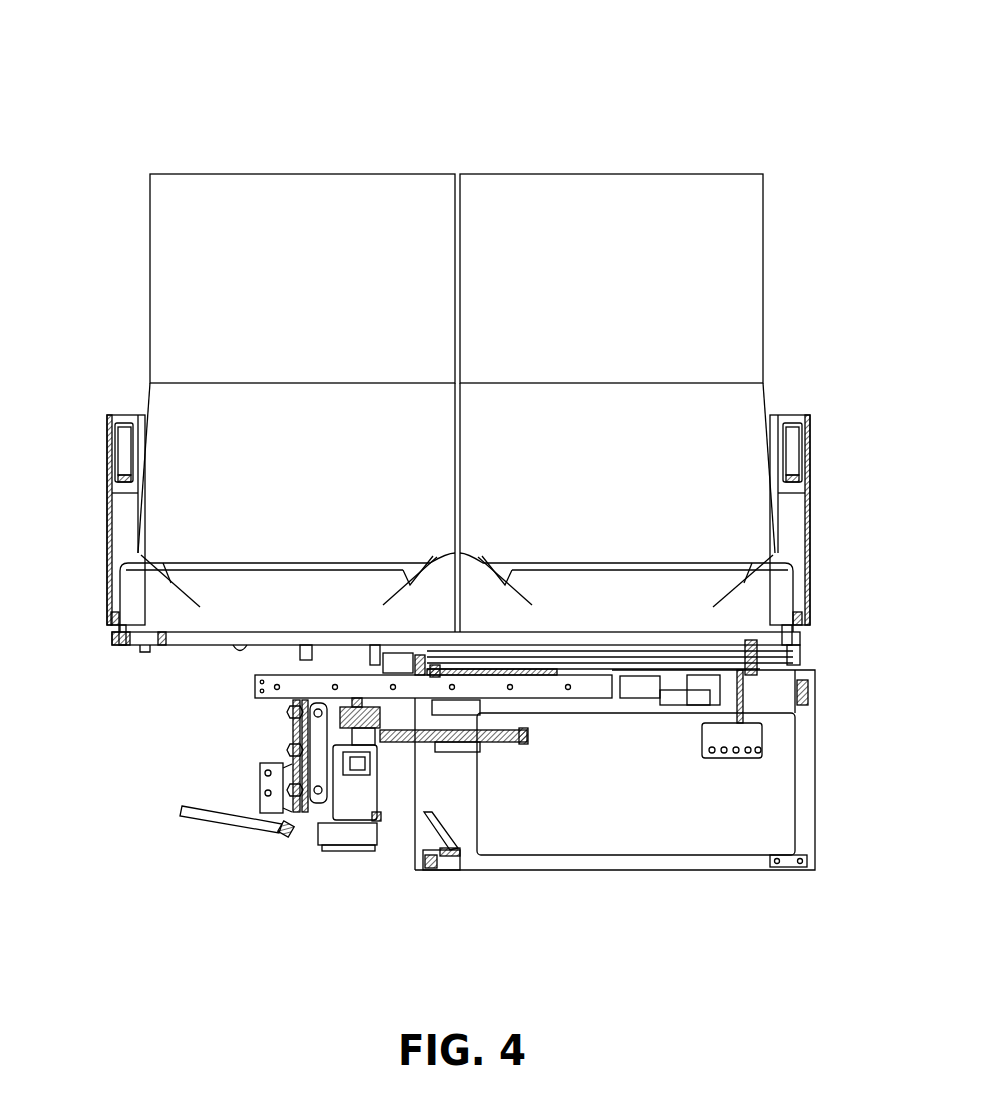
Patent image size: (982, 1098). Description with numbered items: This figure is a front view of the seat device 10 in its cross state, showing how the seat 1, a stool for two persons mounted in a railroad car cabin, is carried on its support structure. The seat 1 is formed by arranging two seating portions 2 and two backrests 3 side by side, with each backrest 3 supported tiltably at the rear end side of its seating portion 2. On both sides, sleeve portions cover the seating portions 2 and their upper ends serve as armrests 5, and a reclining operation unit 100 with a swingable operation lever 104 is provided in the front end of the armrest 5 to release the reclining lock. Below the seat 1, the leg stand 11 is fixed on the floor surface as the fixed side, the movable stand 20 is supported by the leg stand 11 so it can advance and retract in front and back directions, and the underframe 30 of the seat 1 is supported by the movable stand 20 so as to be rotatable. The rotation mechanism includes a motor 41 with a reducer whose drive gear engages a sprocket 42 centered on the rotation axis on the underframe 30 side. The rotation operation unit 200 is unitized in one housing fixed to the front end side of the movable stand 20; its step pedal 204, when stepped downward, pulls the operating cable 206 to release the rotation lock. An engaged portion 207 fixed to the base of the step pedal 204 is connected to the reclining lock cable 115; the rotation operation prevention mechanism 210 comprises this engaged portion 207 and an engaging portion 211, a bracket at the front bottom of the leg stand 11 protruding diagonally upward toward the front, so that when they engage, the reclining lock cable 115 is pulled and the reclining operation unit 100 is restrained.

The seat device 10 is at (541, 104).
The seat 1 is at (701, 160).
The backrest 3 is at (320, 205).
The seating portion 2 is at (298, 590).
The armrest 5 is at (120, 414).
The reclining operation unit 100 is at (107, 428).
The operation lever 104 is at (118, 447).
The underframe 30 is at (110, 633).
The movable stand 20 is at (246, 692).
The leg stand 11 is at (822, 787).
The rotation operation unit 200 is at (246, 779).
The operating cable 206 is at (286, 760).
The step pedal 204 is at (195, 818).
The engaged portion 207 is at (285, 831).
The reclining lock cable 115 is at (318, 826).
The motor 41 is at (345, 856).
The sprocket 42 is at (522, 746).
The rotation operation prevention mechanism 210 is at (415, 846).
The engaging portion 211 is at (429, 878).